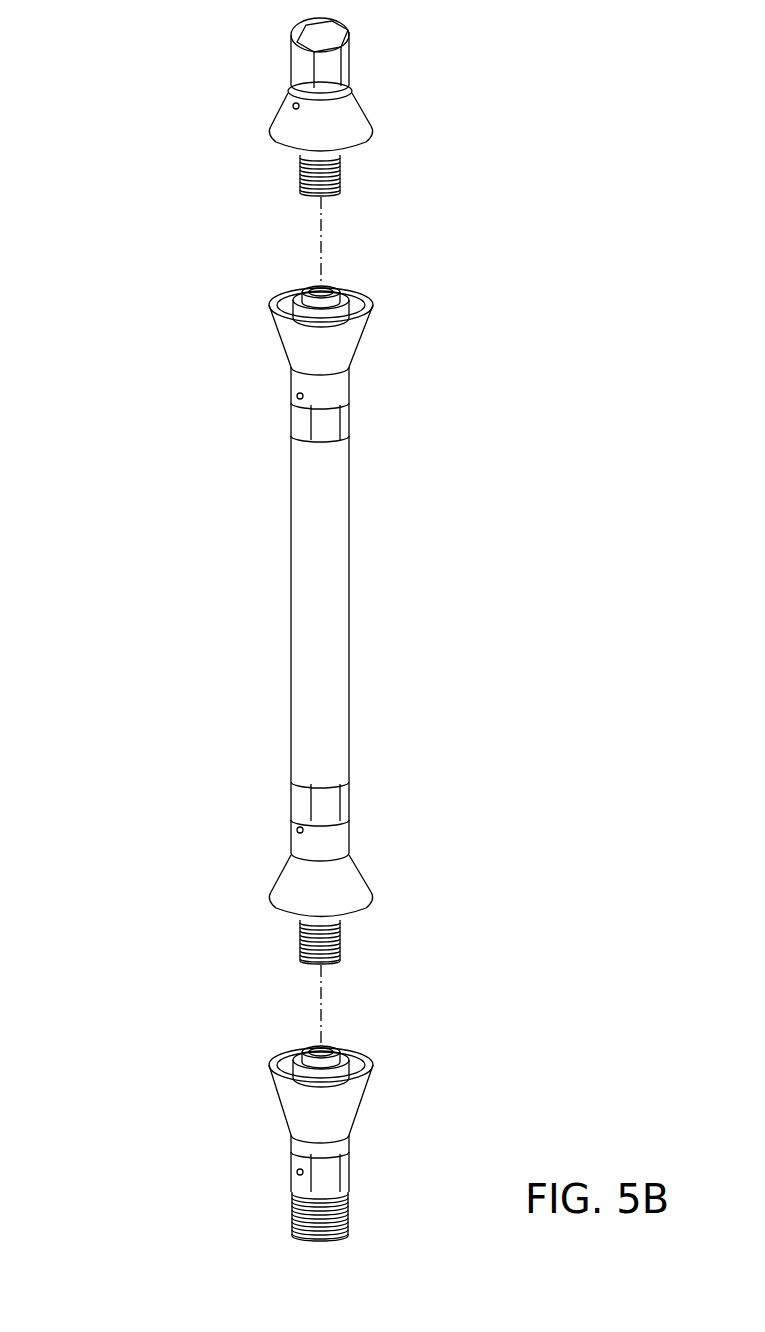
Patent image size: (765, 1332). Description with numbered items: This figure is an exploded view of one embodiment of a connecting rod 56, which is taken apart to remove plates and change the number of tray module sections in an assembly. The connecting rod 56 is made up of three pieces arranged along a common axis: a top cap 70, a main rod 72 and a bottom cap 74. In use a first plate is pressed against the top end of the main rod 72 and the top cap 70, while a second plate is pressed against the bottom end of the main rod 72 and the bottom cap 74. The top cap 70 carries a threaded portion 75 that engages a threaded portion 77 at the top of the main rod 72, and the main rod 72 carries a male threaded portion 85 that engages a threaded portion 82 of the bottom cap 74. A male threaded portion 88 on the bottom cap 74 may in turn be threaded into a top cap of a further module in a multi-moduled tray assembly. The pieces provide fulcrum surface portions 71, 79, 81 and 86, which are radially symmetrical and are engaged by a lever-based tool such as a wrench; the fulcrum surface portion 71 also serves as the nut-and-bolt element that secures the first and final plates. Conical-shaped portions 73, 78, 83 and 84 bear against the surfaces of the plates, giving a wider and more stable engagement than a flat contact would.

The connecting rod 56 is at (138, 46).
The top cap 70 is at (403, 15).
The fulcrum surface portion 71 is at (295, 58).
The conical-shaped portion 73 is at (280, 118).
The threaded portion 75 is at (300, 175).
The main rod 72 is at (218, 965).
The threaded portion 77 is at (343, 290).
The conical-shaped portion 78 is at (342, 345).
The fulcrum surface portion 79 is at (345, 412).
The fulcrum surface portion 81 is at (345, 797).
The conical-shaped portion 83 is at (350, 890).
The male threaded portion 85 is at (342, 945).
The bottom cap 74 is at (432, 1043).
The threaded portion 82 is at (343, 1052).
The conical-shaped portion 84 is at (297, 1110).
The fulcrum surface portion 86 is at (290, 1180).
The male threaded portion 88 is at (292, 1213).